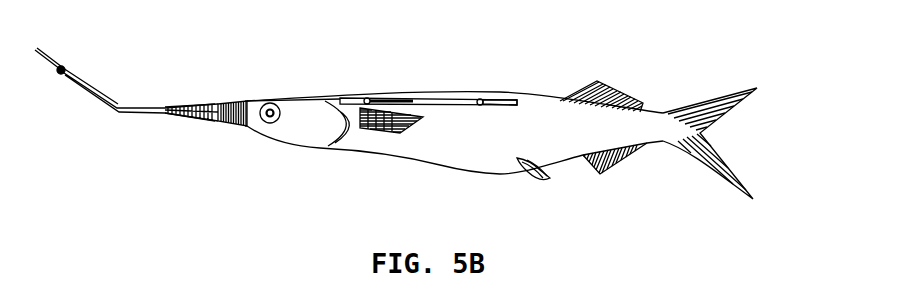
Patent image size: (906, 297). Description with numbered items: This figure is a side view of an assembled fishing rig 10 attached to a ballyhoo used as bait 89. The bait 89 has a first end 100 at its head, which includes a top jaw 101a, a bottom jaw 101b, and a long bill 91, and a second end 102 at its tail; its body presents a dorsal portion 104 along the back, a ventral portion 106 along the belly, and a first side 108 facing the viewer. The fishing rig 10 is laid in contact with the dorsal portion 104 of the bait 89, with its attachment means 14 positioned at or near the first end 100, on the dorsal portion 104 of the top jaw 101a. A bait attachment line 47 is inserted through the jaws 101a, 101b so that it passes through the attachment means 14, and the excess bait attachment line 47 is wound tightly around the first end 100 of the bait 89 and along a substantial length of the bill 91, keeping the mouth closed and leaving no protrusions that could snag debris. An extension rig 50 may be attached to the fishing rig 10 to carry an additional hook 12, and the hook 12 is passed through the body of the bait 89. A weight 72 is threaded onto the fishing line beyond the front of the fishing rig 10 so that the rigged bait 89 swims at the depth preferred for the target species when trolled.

The fishing rig 10 is at (304, 98).
The hook 12 is at (522, 98).
The attachment means 14 is at (235, 103).
The bait attachment line 47 is at (233, 123).
The extension rig 50 is at (448, 97).
The weight 72 is at (65, 65).
The bait 89 is at (300, 130).
The bill 91 is at (137, 115).
The first end 100 is at (263, 143).
The top jaw 101a is at (214, 107).
The bottom jaw 101b is at (218, 125).
The second end 102 is at (670, 133).
The dorsal portion 104 is at (507, 96).
The ventral portion 106 is at (470, 172).
The first side 108 is at (443, 140).